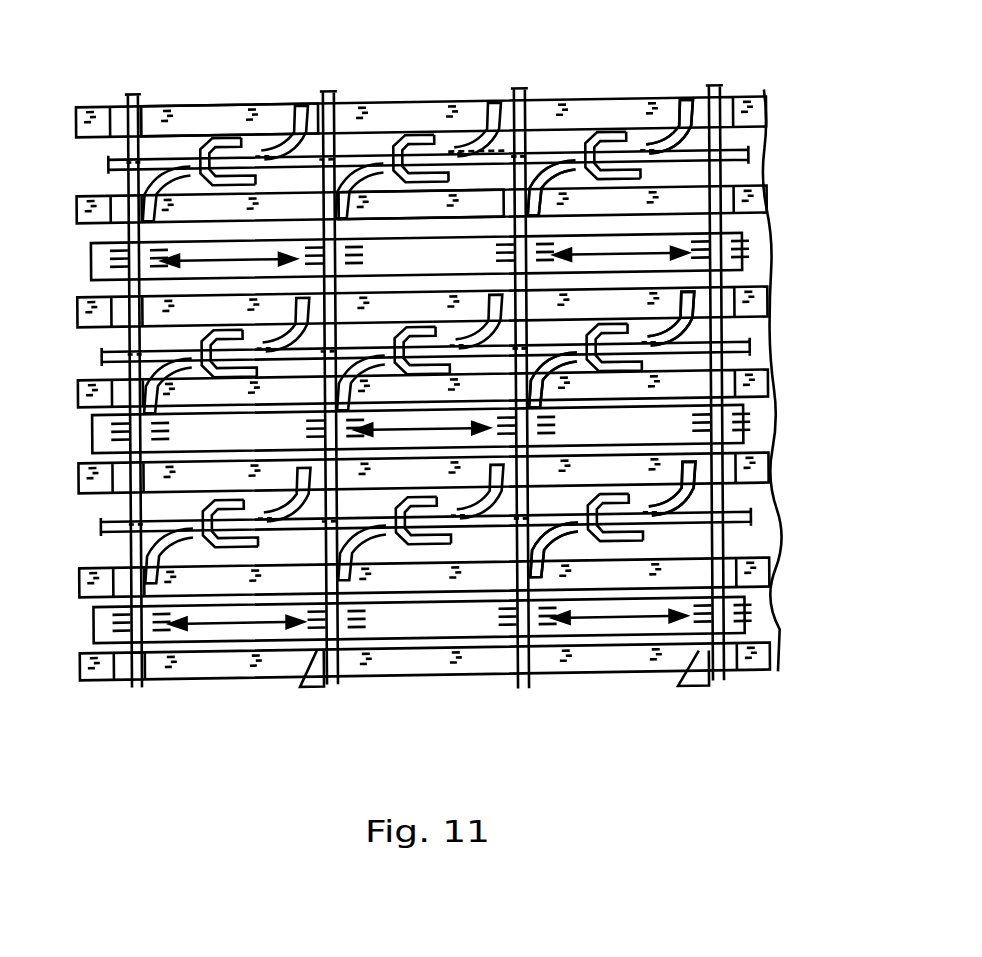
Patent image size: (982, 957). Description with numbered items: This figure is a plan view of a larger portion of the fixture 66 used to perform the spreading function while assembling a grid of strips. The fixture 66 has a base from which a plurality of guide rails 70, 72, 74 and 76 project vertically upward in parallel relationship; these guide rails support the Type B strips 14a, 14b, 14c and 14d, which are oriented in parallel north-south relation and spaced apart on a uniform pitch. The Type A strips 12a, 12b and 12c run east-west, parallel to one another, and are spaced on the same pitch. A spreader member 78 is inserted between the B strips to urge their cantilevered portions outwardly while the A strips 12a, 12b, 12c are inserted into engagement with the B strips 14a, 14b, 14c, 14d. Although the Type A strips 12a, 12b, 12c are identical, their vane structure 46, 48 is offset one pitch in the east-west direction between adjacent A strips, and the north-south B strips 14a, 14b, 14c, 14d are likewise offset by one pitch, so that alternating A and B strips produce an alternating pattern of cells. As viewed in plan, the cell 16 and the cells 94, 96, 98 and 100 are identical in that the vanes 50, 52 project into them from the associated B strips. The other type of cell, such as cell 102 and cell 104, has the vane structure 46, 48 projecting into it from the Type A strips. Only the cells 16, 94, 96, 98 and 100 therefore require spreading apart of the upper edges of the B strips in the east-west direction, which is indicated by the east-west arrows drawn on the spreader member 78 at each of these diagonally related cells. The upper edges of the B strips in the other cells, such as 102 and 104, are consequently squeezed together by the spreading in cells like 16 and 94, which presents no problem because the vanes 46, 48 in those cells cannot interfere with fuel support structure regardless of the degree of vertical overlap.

The Type A strip 12a is at (563, 145).
The Type A strip 12b is at (640, 336).
The Type A strip 12c is at (650, 500).
The Type B strip 14a is at (141, 95).
The Type B strip 14b is at (333, 93).
The Type B strip 14c is at (529, 95).
The Type B strip 14d is at (726, 90).
The cell 16 is at (346, 103).
The vane structure 46 is at (455, 330).
The vane structure 48 is at (358, 196).
The vane 50 is at (163, 186).
The vane 52 is at (291, 325).
The fixture 66 is at (757, 52).
The guide rail 70 is at (125, 105).
The guide rail 72 is at (93, 196).
The guide rail 74 is at (95, 328).
The guide rail 76 is at (76, 406).
The spreader member 78 is at (92, 264).
The cell 94 is at (218, 646).
The cell 96 is at (486, 371).
The cell 98 is at (680, 181).
The cell 100 is at (658, 548).
The cell 102 is at (461, 185).
The cell 104 is at (259, 498).